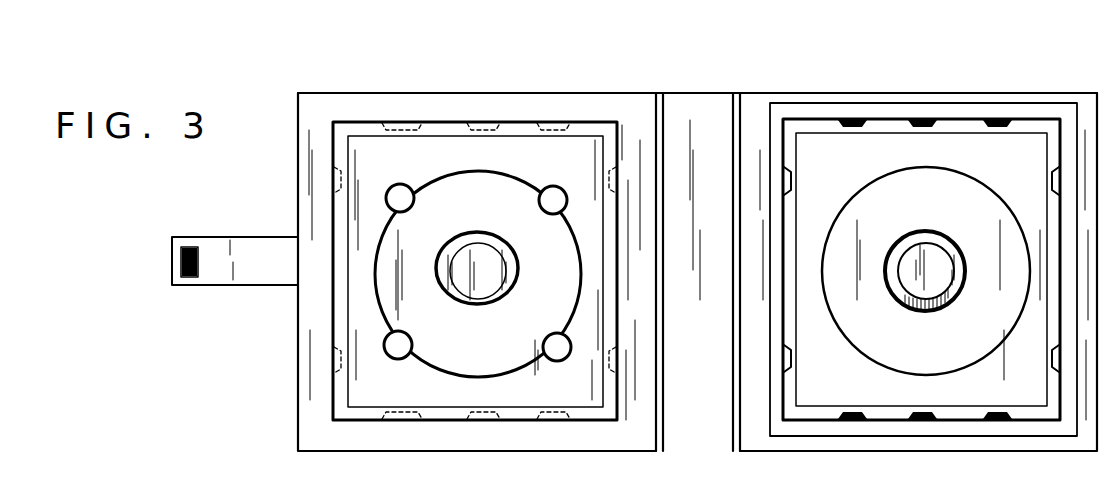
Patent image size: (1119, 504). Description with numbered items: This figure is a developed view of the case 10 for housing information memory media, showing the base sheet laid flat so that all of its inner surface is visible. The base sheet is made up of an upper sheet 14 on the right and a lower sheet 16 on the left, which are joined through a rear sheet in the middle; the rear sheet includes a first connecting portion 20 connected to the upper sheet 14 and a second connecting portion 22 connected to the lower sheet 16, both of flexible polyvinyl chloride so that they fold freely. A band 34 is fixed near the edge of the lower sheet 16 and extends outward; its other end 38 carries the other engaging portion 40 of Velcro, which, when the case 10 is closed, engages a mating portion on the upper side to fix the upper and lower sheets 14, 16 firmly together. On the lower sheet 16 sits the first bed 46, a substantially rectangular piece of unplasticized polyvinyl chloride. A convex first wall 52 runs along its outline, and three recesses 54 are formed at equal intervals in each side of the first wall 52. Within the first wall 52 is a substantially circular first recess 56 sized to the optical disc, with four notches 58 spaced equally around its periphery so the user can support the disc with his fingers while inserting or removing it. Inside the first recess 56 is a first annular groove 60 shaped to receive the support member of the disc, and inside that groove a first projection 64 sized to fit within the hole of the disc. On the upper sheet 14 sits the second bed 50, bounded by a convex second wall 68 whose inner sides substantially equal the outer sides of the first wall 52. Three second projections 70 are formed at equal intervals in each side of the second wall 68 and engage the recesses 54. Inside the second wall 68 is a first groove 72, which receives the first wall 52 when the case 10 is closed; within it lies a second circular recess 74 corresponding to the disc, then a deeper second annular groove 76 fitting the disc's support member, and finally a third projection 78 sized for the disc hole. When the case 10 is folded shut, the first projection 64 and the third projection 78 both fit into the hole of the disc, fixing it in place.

The case 10 is at (1043, 73).
The upper sheet 14 is at (983, 452).
The lower sheet 16 is at (405, 452).
The first connecting portion 20 is at (730, 347).
The second connecting portion 22 is at (665, 377).
The band 34 is at (250, 285).
The other end of the band 38 is at (200, 237).
The other engaging portion 40 is at (190, 285).
The first bed 46 is at (430, 121).
The second bed 50 is at (798, 103).
The first wall 52 is at (612, 404).
The recesses 54 is at (333, 367).
The first recess 56 is at (428, 182).
The notches 58 is at (405, 356).
The first annular groove 60 is at (521, 265).
The first projection 64 is at (480, 300).
The second wall 68 is at (782, 367).
The second projections 70 is at (1048, 178).
The first groove 72 is at (793, 150).
The second circular recess 74 is at (1000, 346).
The second annular groove 76 is at (922, 311).
The third projection 78 is at (920, 246).